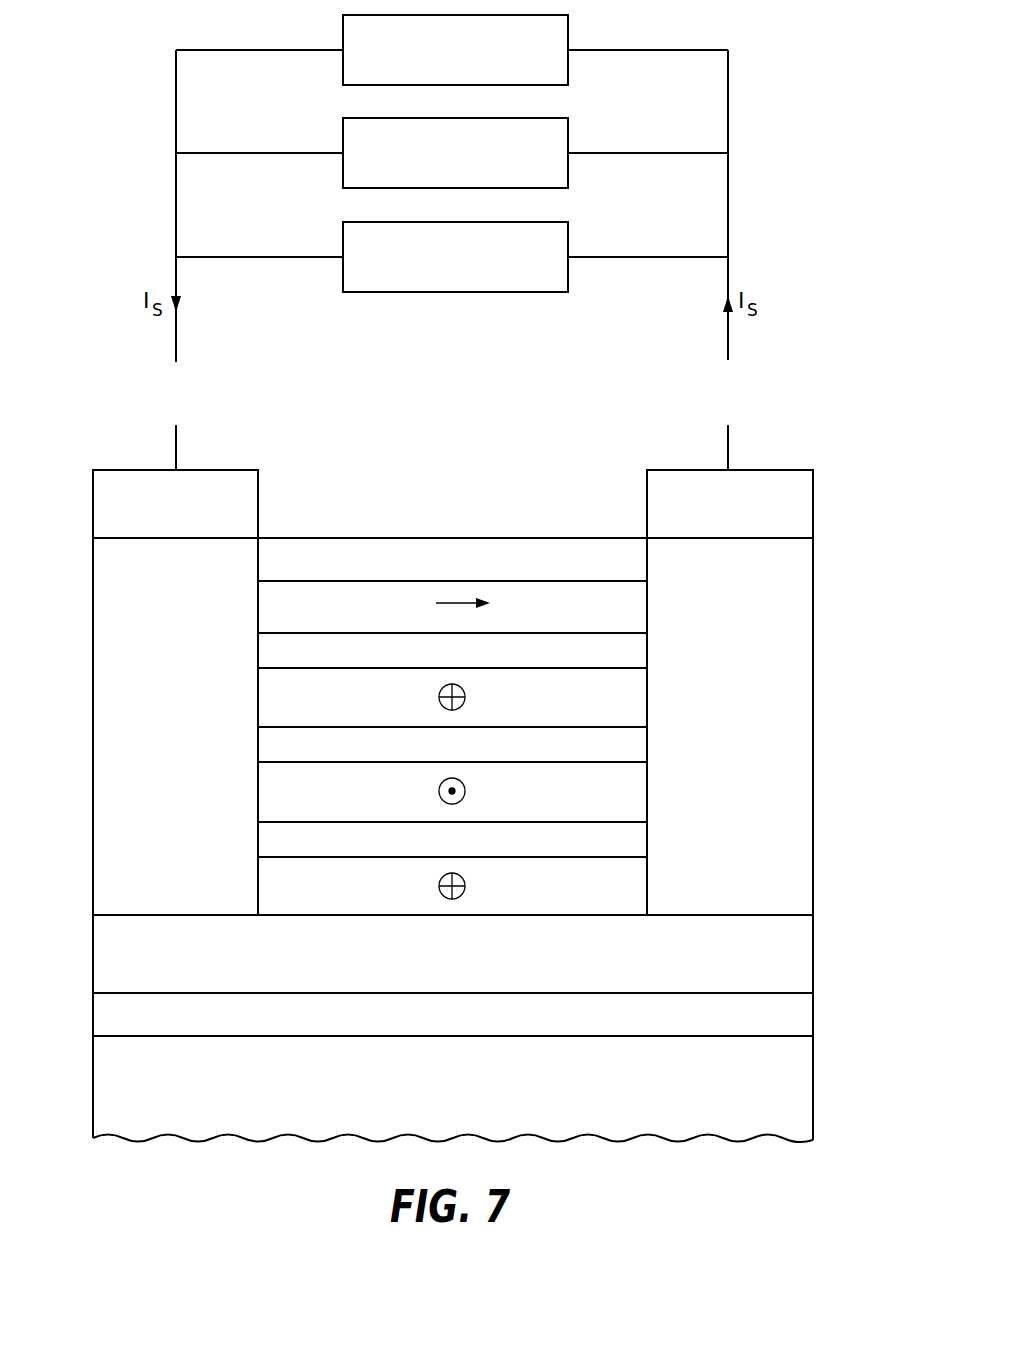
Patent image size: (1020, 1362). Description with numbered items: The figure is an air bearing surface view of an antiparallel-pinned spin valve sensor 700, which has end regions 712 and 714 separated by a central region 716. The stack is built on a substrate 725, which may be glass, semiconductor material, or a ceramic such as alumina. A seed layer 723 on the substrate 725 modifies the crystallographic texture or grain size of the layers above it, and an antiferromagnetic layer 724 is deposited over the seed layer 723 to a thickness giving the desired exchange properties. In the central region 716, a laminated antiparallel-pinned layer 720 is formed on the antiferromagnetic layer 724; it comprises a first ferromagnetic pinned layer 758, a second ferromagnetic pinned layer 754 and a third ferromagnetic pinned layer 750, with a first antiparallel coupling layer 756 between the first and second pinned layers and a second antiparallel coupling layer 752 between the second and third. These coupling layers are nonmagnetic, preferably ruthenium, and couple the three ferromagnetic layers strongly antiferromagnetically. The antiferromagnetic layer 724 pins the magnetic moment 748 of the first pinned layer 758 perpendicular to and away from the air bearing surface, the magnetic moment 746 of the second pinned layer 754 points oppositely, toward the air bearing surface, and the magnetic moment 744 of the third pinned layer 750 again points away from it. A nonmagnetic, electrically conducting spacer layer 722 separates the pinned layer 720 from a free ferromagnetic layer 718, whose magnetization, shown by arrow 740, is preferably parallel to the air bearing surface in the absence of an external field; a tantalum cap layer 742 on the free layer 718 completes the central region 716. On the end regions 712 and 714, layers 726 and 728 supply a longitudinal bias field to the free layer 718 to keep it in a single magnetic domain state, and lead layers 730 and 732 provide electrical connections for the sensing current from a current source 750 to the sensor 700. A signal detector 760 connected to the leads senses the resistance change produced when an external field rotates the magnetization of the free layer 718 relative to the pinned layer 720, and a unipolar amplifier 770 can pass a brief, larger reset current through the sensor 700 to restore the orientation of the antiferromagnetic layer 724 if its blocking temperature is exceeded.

The spin valve sensor 700 is at (689, 1163).
The end region 712 is at (255, 404).
The end region 714 is at (812, 406).
The central region 716 is at (645, 454).
The free layer 718 is at (642, 605).
The AP-pinned layer 720 is at (242, 668).
The spacer layer 722 is at (642, 647).
The seed layer 723 is at (808, 1015).
The antiferromagnetic layer 724 is at (808, 962).
The substrate 725 is at (808, 1082).
The longitudinal bias layer 726 is at (100, 576).
The longitudinal bias layer 728 is at (808, 563).
The first contact 730 is at (100, 508).
The lead layer 732 is at (805, 505).
The free layer magnetization arrow 740 is at (446, 604).
The cap layer 742 is at (642, 563).
The magnetic moment of FM3 layer 744 is at (466, 697).
The magnetic moment of FM2 layer 746 is at (466, 791).
The magnetic moment of FM1 layer 748 is at (466, 886).
The third ferromagnetic pinned layer (FM3); current source 750 is at (570, 228).
The second antiparallel coupling layer 752 is at (642, 743).
The second ferromagnetic pinned layer 754 is at (642, 790).
The first antiparallel coupling layer 756 is at (642, 835).
The first ferromagnetic pinned layer 758 is at (642, 887).
The signal detector 760 is at (570, 123).
The unipolar amplifier 770 is at (570, 20).